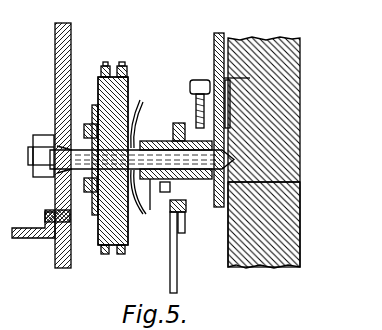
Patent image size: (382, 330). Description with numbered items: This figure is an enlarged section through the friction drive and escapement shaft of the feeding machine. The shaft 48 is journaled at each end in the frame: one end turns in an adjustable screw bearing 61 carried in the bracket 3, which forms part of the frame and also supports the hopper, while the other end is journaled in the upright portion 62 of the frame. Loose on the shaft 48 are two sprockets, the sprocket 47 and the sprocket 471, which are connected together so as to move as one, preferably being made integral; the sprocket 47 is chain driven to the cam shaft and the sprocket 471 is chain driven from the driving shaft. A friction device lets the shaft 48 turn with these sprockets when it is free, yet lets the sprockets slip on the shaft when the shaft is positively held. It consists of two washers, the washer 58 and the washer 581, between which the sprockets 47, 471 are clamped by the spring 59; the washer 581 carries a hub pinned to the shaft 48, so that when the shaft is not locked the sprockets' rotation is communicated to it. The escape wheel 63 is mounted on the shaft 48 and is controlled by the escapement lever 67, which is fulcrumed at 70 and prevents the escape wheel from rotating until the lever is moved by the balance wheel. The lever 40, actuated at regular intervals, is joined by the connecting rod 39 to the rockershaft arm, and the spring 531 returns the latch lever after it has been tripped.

The bracket 3 is at (60, 188).
The connecting rod 39 is at (175, 272).
The lever 40 is at (185, 230).
The sprocket 47 is at (128, 84).
The sprocket 471 is at (104, 65).
The shaft 48 is at (148, 200).
The spring 531 is at (238, 112).
The washer 58 is at (138, 108).
The spring 59 is at (141, 131).
The washer 581 is at (52, 78).
The adjustable screw bearing 61 is at (42, 141).
The upright portion of the frame 62 is at (290, 142).
The escape wheel 63 is at (300, 181).
The escapement lever 67 is at (219, 44).
The fulcrum 70 is at (238, 84).